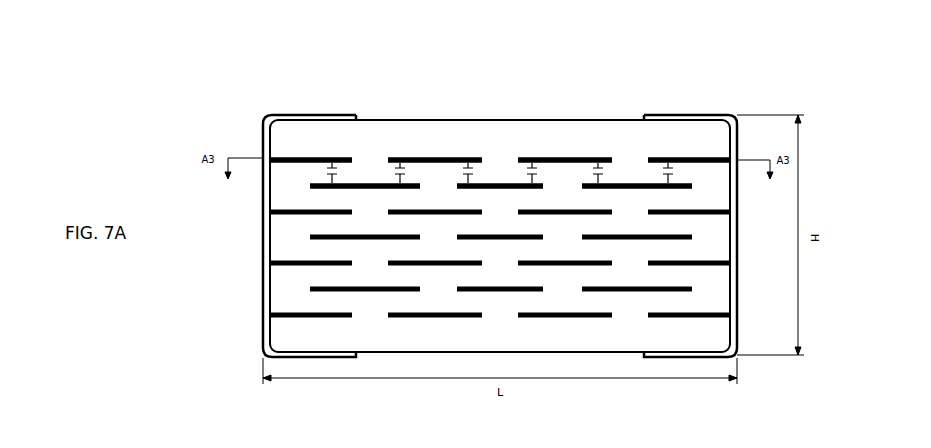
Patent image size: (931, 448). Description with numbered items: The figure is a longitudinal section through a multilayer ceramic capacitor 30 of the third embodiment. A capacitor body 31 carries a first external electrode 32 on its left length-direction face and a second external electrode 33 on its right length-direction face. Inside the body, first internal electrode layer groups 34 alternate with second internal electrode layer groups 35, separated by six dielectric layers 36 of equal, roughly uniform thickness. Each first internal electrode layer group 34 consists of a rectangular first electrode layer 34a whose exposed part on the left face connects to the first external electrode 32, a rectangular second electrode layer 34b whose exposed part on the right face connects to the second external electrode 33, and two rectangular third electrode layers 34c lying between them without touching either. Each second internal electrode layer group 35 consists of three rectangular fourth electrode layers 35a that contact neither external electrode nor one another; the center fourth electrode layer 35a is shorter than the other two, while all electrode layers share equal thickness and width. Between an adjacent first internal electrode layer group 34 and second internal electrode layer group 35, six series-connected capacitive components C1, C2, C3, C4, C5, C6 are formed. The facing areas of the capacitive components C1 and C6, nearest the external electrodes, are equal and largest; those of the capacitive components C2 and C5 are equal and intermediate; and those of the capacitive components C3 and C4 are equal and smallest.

The multilayer ceramic capacitor 30 is at (272, 107).
The capacitor body 31 is at (465, 119).
The first external electrode 32 is at (289, 114).
The second external electrode 33 is at (706, 113).
The first internal electrode layer group 34 is at (731, 156).
The first electrode layer 34a is at (318, 157).
The second electrode layer 34b is at (682, 157).
The third electrode layer 34c is at (430, 157).
The second internal electrode layer group 35 is at (693, 190).
The fourth electrode layer 35a is at (363, 183).
The dielectric layer 36 is at (350, 197).
The capacitive component C1 is at (323, 173).
The capacitive component C2 is at (391, 173).
The capacitive component C3 is at (459, 173).
The capacitive component C4 is at (523, 173).
The capacitive component C5 is at (589, 173).
The capacitive component C6 is at (659, 173).